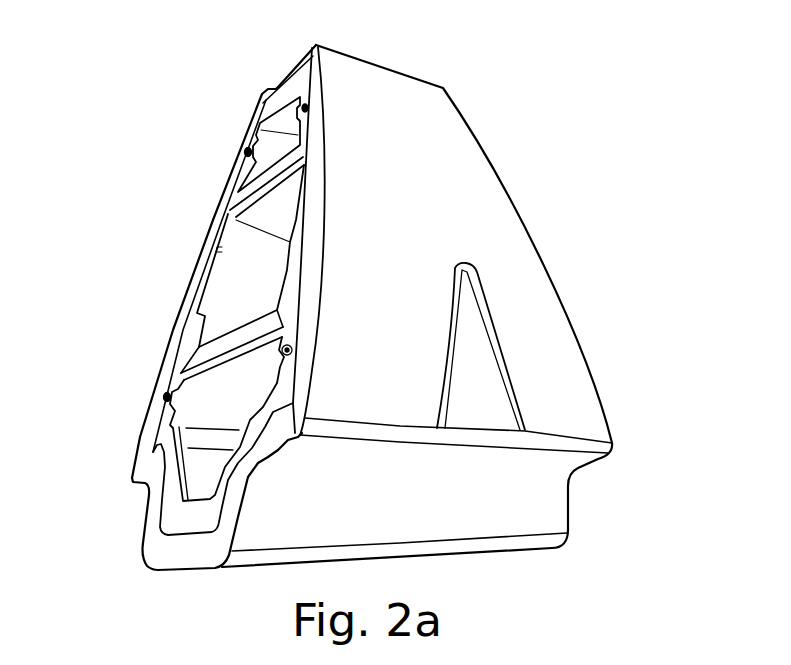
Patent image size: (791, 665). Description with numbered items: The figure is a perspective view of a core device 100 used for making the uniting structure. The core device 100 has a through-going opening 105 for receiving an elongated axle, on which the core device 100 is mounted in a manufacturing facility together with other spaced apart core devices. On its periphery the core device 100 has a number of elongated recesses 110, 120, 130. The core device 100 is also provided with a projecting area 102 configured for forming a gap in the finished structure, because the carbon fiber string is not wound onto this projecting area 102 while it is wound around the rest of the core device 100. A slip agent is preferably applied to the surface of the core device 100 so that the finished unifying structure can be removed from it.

The core device 100 is at (486, 139).
The projecting area 102 is at (475, 392).
The through-going opening 105 is at (247, 245).
The elongated recess 110 is at (291, 82).
The elongated recess 120 is at (142, 490).
The elongated recess 130 is at (535, 498).